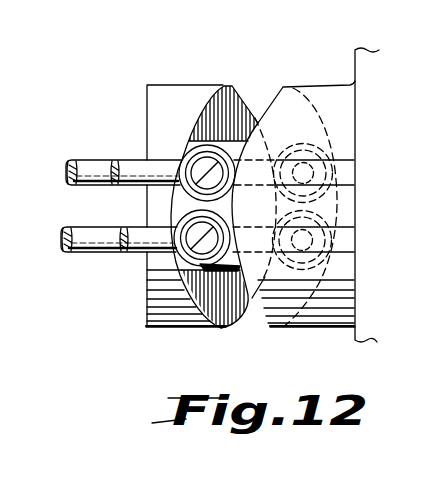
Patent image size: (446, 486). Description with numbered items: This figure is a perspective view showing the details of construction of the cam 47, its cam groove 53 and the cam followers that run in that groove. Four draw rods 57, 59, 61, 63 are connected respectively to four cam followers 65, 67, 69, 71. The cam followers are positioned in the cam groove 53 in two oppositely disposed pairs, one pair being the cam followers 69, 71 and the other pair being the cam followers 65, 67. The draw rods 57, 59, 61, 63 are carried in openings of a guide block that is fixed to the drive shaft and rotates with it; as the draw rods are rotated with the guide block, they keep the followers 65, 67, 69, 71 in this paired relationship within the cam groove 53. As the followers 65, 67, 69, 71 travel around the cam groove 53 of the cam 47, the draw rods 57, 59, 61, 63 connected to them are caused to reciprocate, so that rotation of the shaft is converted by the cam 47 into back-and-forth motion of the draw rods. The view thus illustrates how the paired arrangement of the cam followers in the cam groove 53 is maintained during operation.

The cam 47 is at (173, 92).
The cam groove 53 is at (225, 101).
The draw rod 57 is at (142, 240).
The draw rod 59 is at (132, 163).
The draw rod 61 is at (83, 232).
The draw rod 63 is at (83, 163).
The cam follower 65 is at (181, 279).
The cam follower 67 is at (192, 142).
The cam follower 69 is at (315, 216).
The cam follower 71 is at (314, 148).